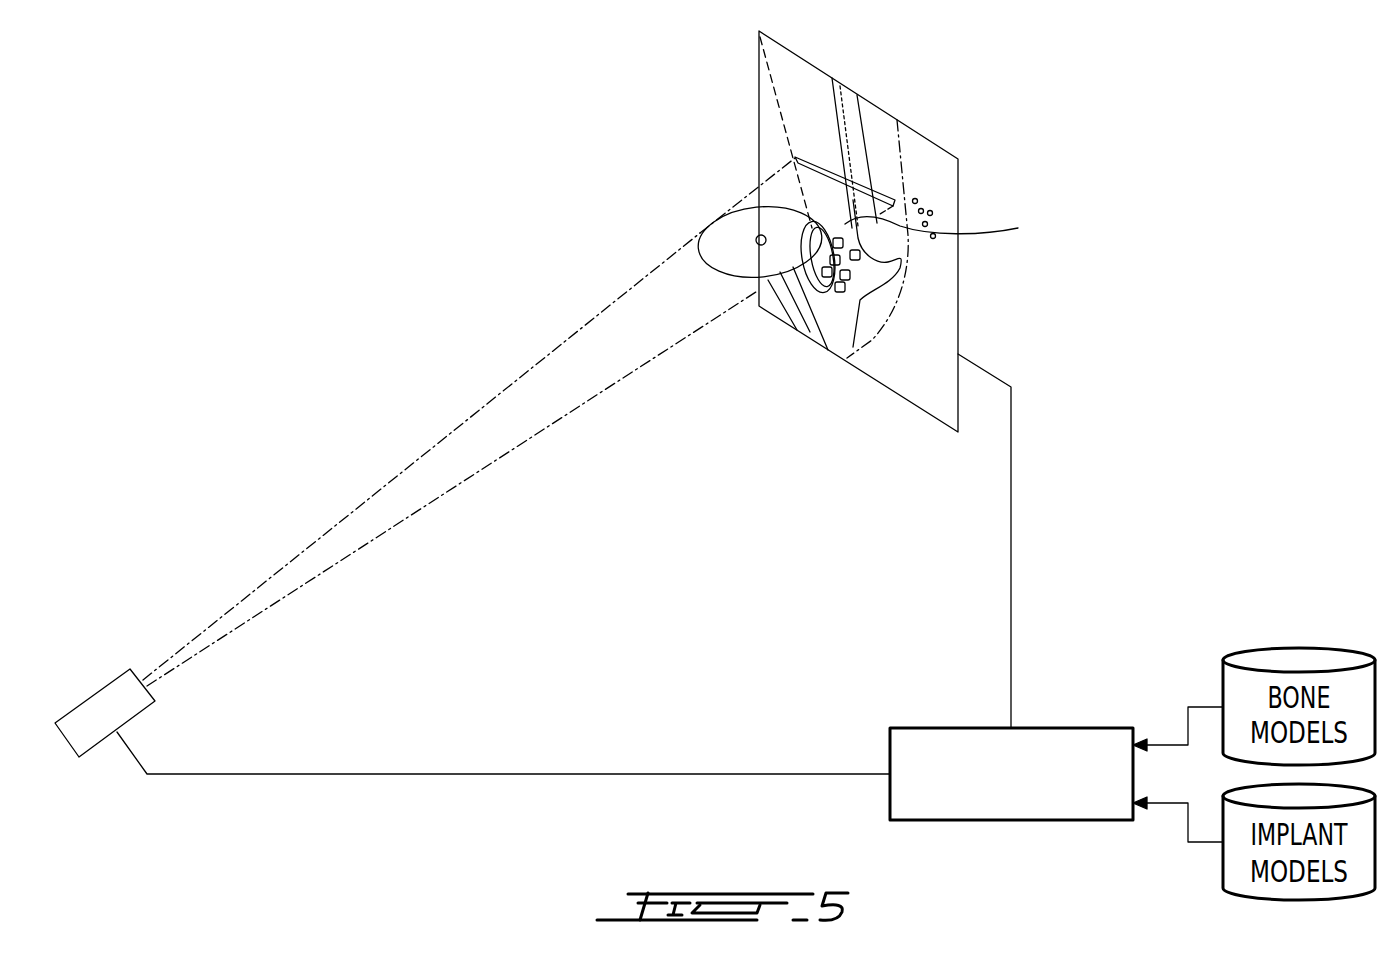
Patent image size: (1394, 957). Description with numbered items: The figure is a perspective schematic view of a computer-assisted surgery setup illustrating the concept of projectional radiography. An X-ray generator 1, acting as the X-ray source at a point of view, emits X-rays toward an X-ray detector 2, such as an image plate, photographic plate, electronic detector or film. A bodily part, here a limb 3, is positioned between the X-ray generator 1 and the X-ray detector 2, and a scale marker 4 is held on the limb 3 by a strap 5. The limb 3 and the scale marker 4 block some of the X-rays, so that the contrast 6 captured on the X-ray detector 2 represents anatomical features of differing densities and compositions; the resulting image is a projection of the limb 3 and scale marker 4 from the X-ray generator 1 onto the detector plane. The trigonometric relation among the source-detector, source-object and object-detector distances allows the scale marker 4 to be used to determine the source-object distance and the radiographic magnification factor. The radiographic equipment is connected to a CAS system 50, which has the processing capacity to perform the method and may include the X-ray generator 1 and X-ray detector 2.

The X-ray generator 1 is at (110, 708).
The X-ray detector 2 is at (757, 42).
The limb 3 is at (730, 213).
The scale marker 4 is at (937, 230).
The strap 5 is at (812, 222).
The contrast 6 is at (793, 77).
The CAS system 50 is at (937, 727).